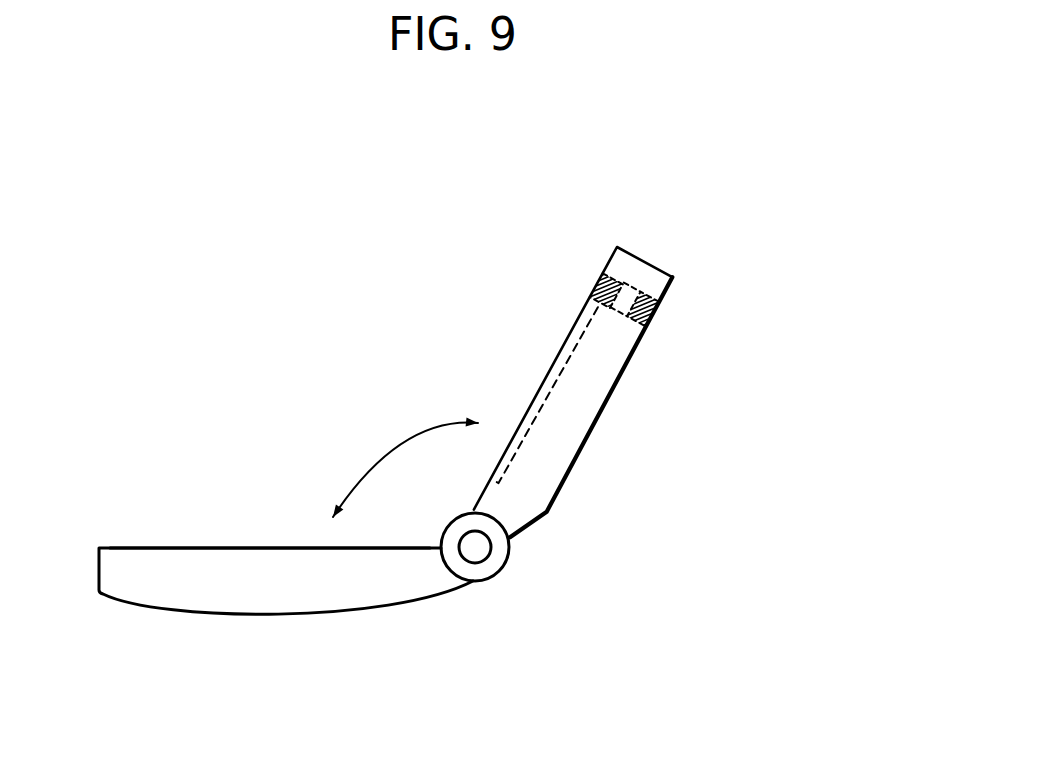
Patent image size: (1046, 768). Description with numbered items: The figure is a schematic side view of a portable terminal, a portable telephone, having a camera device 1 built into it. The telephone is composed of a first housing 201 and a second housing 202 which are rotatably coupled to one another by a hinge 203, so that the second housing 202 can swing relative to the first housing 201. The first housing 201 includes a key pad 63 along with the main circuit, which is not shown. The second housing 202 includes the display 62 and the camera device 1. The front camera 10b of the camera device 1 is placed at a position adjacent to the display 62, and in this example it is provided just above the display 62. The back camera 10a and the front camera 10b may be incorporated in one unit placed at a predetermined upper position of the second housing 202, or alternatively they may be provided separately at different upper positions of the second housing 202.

The camera device 1 is at (637, 273).
The back camera 10a is at (660, 298).
The front camera 10b is at (603, 277).
The display 62 is at (555, 363).
The key pad 63 is at (205, 545).
The first housing 201 is at (283, 605).
The second housing 202 is at (560, 453).
The hinge 203 is at (493, 562).